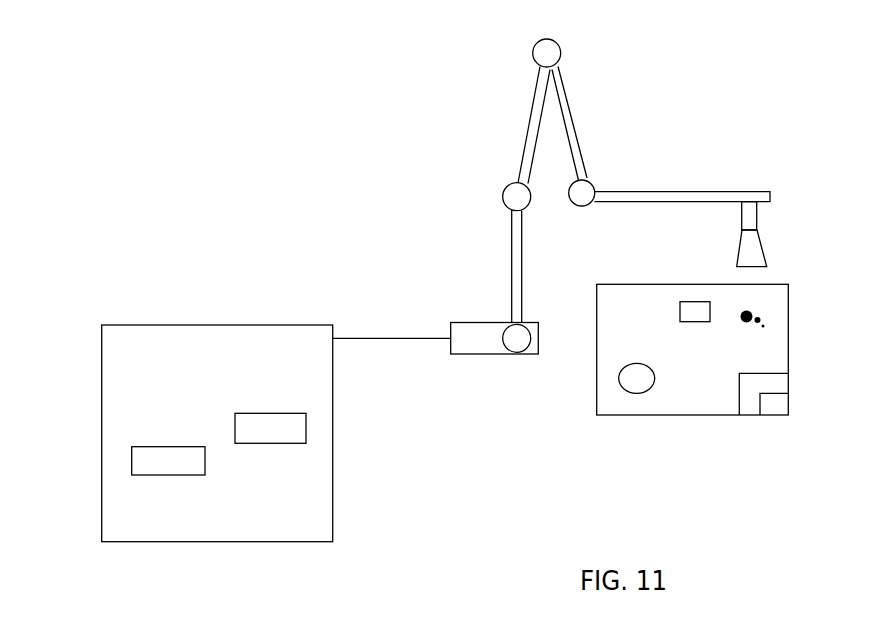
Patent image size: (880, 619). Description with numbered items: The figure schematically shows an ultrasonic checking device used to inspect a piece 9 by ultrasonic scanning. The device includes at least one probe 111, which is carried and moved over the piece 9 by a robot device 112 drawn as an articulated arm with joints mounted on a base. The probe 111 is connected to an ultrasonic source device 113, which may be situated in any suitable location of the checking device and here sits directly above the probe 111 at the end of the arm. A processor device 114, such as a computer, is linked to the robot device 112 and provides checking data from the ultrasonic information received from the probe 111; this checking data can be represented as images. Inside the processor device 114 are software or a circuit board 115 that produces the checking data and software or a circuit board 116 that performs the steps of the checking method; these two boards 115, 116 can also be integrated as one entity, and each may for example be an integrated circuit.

The piece 9 is at (715, 433).
The probe 111 is at (755, 258).
The robot device 112 is at (466, 189).
The ultrasonic source device 113 is at (752, 223).
The processor device 114 is at (248, 543).
The circuit board 115 is at (290, 425).
The circuit board 116 is at (153, 453).